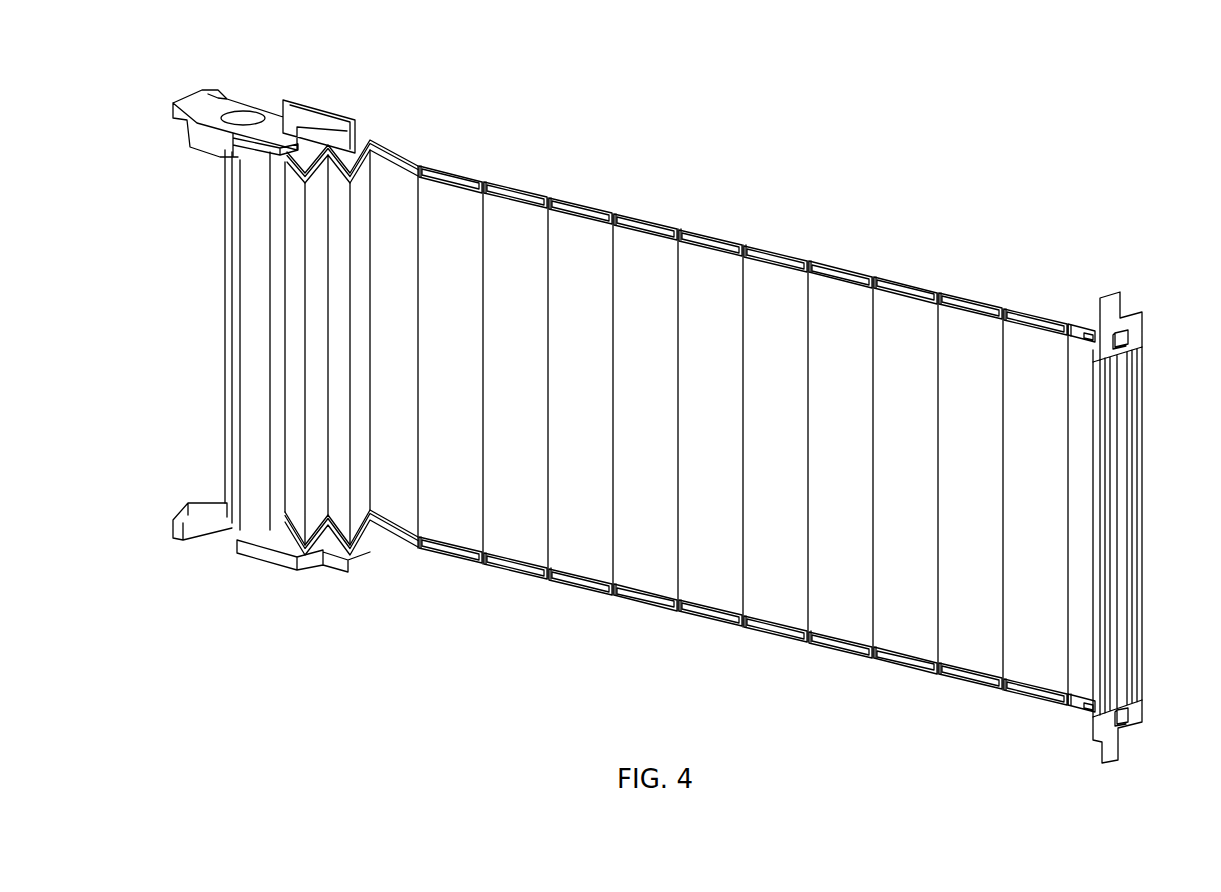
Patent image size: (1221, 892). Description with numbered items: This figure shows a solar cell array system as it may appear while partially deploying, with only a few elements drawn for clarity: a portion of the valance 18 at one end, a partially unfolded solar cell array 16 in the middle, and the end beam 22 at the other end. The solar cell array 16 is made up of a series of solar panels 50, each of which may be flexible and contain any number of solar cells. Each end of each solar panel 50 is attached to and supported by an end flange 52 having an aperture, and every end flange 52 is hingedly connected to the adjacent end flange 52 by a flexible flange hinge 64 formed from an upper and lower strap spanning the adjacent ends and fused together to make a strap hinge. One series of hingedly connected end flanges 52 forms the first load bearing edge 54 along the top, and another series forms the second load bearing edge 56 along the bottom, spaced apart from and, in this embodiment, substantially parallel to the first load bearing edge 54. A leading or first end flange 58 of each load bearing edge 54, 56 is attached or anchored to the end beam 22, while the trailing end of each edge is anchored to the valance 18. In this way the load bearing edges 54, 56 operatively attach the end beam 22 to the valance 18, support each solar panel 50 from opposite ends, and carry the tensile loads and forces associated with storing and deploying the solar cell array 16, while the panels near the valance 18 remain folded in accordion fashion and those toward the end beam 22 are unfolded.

The solar cell array 16 is at (621, 150).
The valance 18 is at (323, 92).
The end beam 22 is at (1164, 465).
The solar panel 50 is at (440, 349).
The end flange 52 is at (515, 188).
The first load bearing edge 54 is at (714, 214).
The second load bearing edge 56 is at (688, 648).
The first end flange 58 is at (1085, 330).
The flange hinge 64 is at (418, 163).